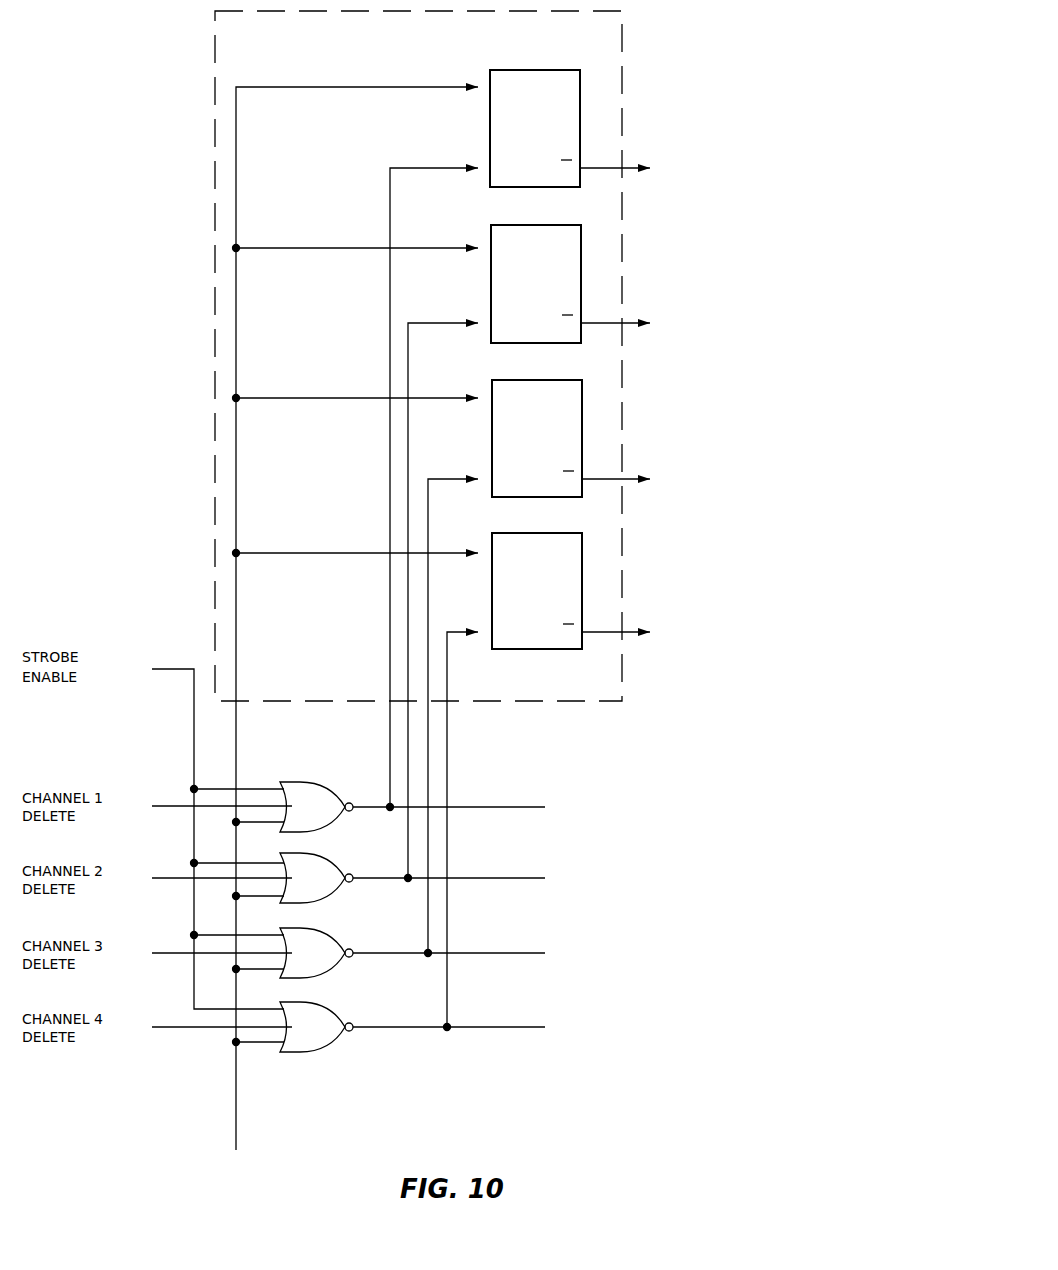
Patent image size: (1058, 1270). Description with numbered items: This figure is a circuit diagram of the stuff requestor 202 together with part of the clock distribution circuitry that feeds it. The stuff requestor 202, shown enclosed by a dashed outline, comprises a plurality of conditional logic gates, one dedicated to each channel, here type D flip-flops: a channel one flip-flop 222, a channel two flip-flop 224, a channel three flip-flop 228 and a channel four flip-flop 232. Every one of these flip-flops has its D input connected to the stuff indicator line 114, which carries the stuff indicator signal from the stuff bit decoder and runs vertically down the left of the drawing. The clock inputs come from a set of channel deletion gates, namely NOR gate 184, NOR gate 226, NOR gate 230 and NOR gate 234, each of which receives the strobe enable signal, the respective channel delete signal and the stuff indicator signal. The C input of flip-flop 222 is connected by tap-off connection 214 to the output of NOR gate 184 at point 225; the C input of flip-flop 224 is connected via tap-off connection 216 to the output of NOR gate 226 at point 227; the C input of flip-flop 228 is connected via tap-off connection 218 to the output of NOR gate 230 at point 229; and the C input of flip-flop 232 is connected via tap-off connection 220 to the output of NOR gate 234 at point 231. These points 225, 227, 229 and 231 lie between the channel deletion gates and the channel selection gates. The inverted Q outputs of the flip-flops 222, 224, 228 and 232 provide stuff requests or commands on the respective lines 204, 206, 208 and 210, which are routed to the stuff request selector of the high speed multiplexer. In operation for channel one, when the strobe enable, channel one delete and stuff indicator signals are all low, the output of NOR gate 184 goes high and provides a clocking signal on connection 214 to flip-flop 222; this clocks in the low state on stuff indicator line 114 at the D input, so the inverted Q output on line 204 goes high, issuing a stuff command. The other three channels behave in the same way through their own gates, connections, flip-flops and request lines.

The stuff requestor 202 is at (207, 76).
The stuff indicator line 114 is at (236, 1110).
The NOR gate 184 is at (308, 782).
The NOR gate 226 is at (330, 853).
The NOR gate 230 is at (322, 928).
The NOR gate 234 is at (322, 1002).
The point 225 is at (396, 830).
The point 227 is at (408, 886).
The point 229 is at (428, 960).
The point 231 is at (447, 1035).
The tap-off connection 214 is at (390, 218).
The tap-off connection 216 is at (408, 375).
The tap-off connection 218 is at (428, 532).
The tap-off connection 220 is at (447, 688).
The channel 1 flip-flop 222 is at (520, 70).
The channel 2 flip-flop 224 is at (540, 225).
The channel 3 flip-flop 228 is at (540, 380).
The channel 4 flip-flop 232 is at (540, 533).
The channel 1 stuff request line 204 is at (622, 165).
The channel 2 stuff request line 206 is at (622, 320).
The channel 3 stuff request line 208 is at (622, 476).
The channel 4 stuff request line 210 is at (622, 629).